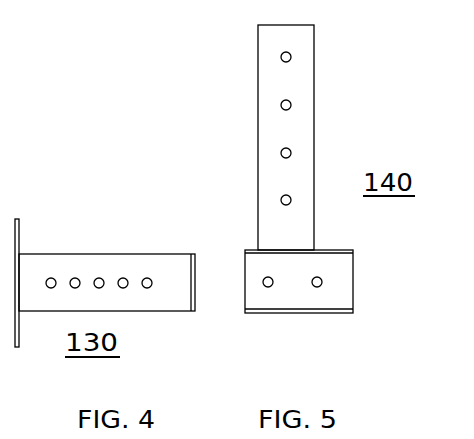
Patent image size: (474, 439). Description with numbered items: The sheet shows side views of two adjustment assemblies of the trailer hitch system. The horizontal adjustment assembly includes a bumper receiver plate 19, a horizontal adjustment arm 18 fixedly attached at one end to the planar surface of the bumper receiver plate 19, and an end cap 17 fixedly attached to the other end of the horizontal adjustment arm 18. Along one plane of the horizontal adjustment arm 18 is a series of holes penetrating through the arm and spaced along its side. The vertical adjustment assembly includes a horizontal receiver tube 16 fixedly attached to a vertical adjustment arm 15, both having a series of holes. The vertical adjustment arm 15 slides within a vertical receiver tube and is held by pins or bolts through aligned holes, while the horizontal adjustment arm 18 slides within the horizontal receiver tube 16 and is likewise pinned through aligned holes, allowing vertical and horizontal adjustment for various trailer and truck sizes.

In FIG. 5, the vertical adjustment arm 15 is at (356, 137).
In FIG. 5, the horizontal receiver tube 16 is at (341, 310).
In FIG. 4, the end cap 17 is at (237, 305).
In FIG. 4, the horizontal adjustment arm 18 is at (107, 254).
In FIG. 4, the bumper receiver plate 19 is at (70, 257).